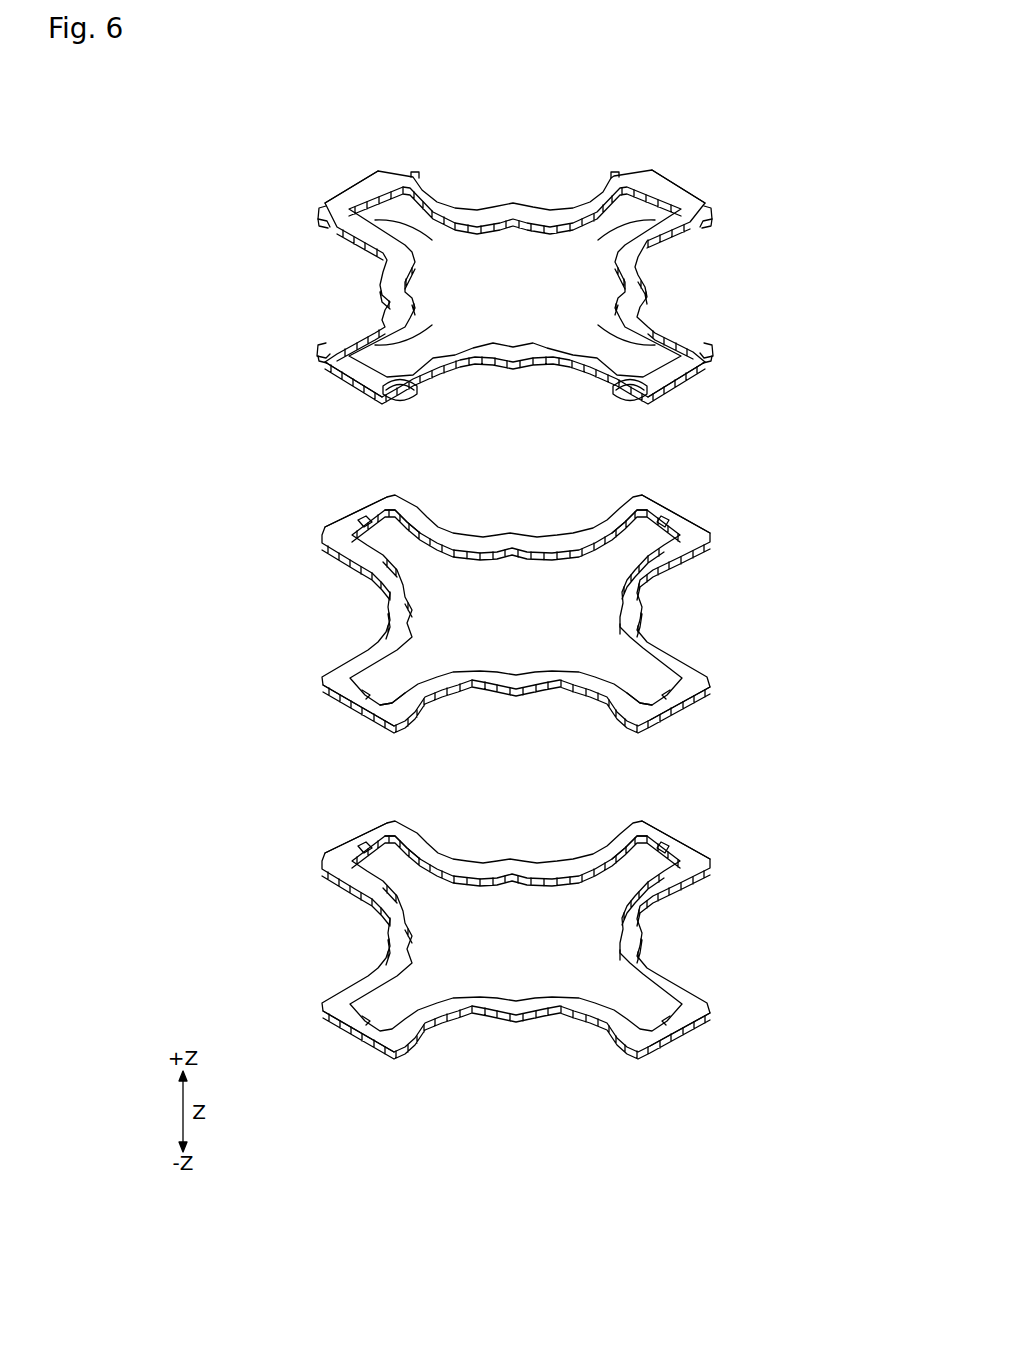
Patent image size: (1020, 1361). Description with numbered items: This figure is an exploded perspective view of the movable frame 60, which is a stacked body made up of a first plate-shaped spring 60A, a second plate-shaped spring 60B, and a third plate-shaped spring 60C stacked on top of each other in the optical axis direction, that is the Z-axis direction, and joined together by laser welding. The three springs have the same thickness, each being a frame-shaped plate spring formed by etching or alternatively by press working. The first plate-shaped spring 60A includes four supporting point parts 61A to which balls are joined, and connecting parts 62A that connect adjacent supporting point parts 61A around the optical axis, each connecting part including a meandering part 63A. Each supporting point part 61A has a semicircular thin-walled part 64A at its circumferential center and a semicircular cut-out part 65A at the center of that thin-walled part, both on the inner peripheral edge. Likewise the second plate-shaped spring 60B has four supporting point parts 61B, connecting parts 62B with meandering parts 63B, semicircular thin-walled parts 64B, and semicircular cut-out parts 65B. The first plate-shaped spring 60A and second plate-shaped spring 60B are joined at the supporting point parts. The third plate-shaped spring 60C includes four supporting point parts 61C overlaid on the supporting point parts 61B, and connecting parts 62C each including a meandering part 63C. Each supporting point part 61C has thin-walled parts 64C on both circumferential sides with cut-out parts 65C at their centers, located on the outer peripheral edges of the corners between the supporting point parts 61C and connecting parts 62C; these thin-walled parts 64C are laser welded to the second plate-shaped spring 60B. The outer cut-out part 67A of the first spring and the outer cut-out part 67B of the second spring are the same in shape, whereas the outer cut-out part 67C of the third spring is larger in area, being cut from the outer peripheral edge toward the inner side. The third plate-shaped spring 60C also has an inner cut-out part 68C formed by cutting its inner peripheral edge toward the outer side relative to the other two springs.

The movable frame 60 is at (175, 937).
The first plate-shaped spring 60A is at (262, 922).
The second plate-shaped spring 60B is at (262, 592).
The third plate-shaped spring 60C is at (262, 301).
The supporting point part 61A is at (536, 938).
The supporting point part 61B is at (348, 525).
The supporting point part 61C is at (345, 185).
The connecting part 62A is at (516, 917).
The connecting part 62B is at (520, 673).
The connecting part 62C is at (514, 345).
The meandering part 63A is at (516, 933).
The meandering part 63B is at (513, 590).
The meandering part 63C is at (509, 214).
The thin-walled part 64A is at (516, 869).
The thin-walled part 64B is at (362, 520).
The thin-walled part 64C is at (411, 174).
The cut-out part 65A is at (517, 934).
The cut-out part 65B is at (415, 530).
The cut-out part 65C is at (415, 178).
The outer cut-out part 67A is at (524, 942).
The outer cut-out part 67B is at (597, 526).
The outer cut-out part 67C is at (430, 200).
The inner cut-out part 68C is at (428, 234).